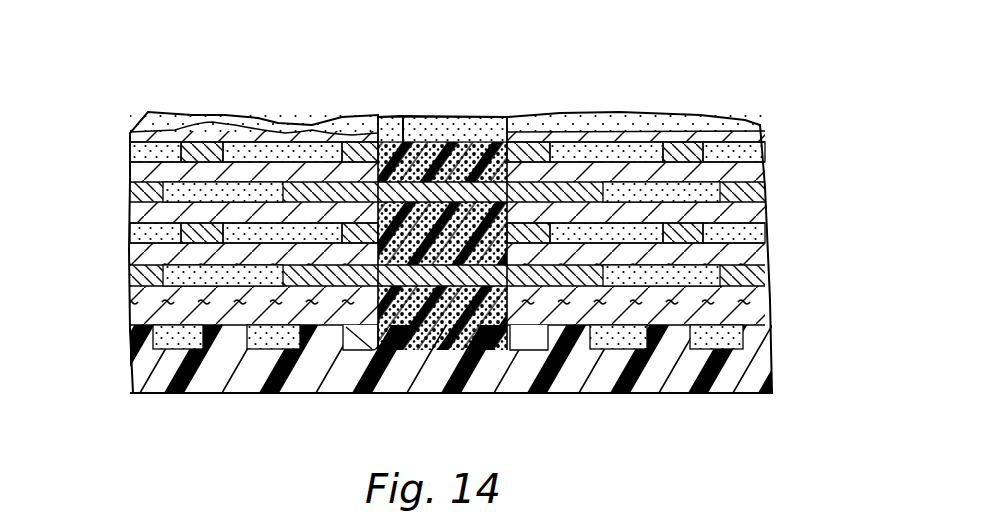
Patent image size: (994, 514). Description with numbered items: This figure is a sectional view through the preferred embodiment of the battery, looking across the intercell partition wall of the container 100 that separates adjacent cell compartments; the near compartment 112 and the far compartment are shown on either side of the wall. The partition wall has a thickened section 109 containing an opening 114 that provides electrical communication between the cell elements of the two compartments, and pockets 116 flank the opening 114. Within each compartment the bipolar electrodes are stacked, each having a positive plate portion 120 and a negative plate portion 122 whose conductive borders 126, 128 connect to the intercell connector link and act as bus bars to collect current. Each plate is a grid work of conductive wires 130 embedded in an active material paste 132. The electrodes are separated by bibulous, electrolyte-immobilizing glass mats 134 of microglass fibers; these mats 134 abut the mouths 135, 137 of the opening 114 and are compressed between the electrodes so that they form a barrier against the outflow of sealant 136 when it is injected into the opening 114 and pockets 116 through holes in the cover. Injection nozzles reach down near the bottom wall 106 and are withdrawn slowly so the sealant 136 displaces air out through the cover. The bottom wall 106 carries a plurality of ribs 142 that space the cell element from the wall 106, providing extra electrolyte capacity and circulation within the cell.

The container 100 is at (122, 386).
The bottom wall 106 is at (632, 388).
The thickened section 109 is at (381, 106).
The cell compartment 112 is at (670, 128).
The opening 114 is at (398, 160).
The pockets 116 is at (438, 128).
The positive plate portion 120 is at (163, 197).
The negative plate portion 122 is at (742, 178).
The conductive border 126 is at (316, 263).
The conductive border 128 is at (560, 265).
The conductive wires 130 is at (221, 145).
The active material paste 132 is at (130, 224).
The mat 134 is at (762, 210).
The mouth 135 is at (493, 127).
The sealant 136 is at (500, 160).
The mouth 137 is at (394, 127).
The ribs 142 is at (217, 332).